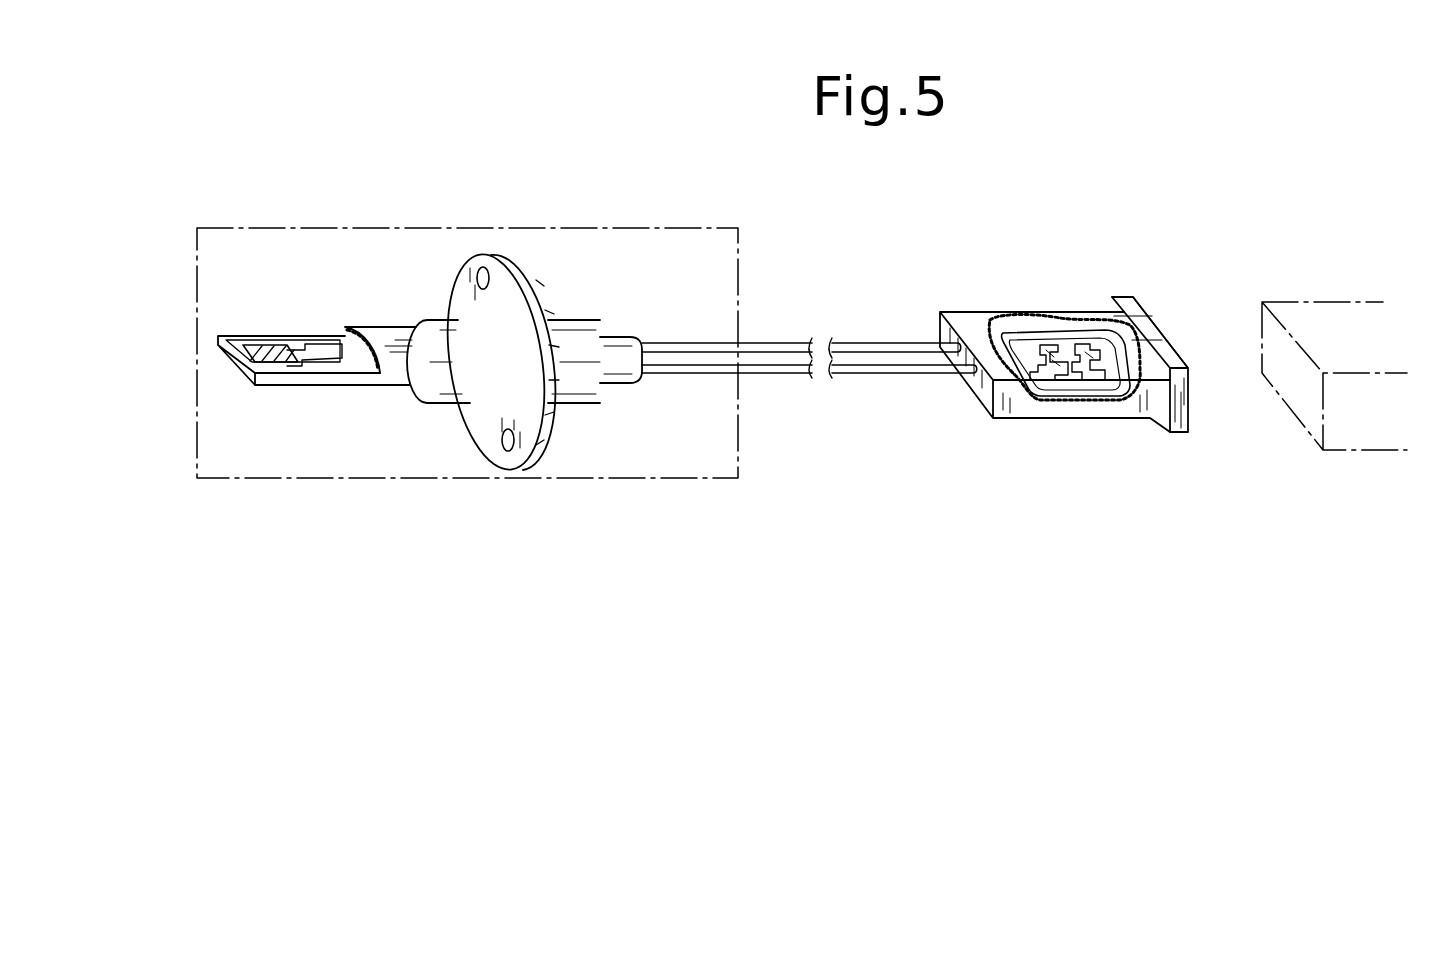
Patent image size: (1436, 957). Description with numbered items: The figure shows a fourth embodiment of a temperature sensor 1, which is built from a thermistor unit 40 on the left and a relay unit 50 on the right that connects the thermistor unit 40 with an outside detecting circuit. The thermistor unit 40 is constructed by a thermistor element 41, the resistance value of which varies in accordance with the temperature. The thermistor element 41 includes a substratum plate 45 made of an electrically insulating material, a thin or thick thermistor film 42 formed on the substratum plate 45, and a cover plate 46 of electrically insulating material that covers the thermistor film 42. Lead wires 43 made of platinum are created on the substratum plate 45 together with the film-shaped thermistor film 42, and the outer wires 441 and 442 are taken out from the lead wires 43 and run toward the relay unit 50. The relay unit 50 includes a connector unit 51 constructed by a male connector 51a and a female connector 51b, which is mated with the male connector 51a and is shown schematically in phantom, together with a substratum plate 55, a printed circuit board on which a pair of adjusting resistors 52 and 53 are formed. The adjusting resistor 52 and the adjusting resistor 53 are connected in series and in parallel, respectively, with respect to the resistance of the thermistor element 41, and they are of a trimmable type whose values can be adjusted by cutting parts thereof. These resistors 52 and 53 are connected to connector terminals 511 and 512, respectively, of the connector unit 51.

The temperature sensor 1 is at (864, 223).
The thermistor unit 40 is at (523, 228).
The thermistor element 41 is at (233, 366).
The thermistor film 42 is at (278, 354).
The lead wires 43 is at (308, 338).
The substratum plate 45 is at (367, 383).
The cover plate 46 is at (384, 340).
The outer wire 441 is at (680, 340).
The outer wire 442 is at (675, 373).
The relay unit 50 is at (1080, 254).
The connector unit 51 is at (1172, 202).
The male connector 51a is at (1140, 305).
The female connector 51b is at (1340, 313).
The connector terminal 511 is at (1138, 327).
The connector terminal 512 is at (1148, 358).
The adjusting resistor 52 is at (1082, 400).
The adjusting resistor 53 is at (1050, 335).
The substratum plate 55 is at (1052, 398).